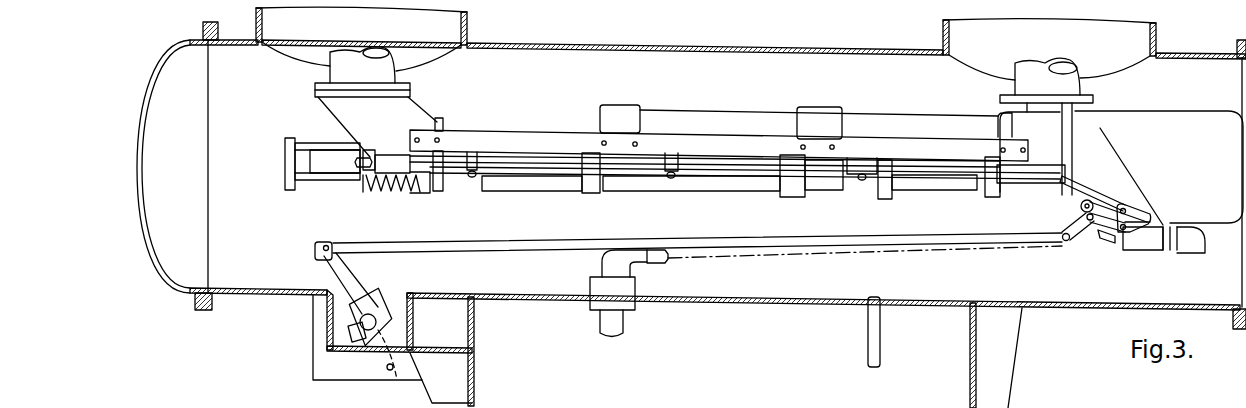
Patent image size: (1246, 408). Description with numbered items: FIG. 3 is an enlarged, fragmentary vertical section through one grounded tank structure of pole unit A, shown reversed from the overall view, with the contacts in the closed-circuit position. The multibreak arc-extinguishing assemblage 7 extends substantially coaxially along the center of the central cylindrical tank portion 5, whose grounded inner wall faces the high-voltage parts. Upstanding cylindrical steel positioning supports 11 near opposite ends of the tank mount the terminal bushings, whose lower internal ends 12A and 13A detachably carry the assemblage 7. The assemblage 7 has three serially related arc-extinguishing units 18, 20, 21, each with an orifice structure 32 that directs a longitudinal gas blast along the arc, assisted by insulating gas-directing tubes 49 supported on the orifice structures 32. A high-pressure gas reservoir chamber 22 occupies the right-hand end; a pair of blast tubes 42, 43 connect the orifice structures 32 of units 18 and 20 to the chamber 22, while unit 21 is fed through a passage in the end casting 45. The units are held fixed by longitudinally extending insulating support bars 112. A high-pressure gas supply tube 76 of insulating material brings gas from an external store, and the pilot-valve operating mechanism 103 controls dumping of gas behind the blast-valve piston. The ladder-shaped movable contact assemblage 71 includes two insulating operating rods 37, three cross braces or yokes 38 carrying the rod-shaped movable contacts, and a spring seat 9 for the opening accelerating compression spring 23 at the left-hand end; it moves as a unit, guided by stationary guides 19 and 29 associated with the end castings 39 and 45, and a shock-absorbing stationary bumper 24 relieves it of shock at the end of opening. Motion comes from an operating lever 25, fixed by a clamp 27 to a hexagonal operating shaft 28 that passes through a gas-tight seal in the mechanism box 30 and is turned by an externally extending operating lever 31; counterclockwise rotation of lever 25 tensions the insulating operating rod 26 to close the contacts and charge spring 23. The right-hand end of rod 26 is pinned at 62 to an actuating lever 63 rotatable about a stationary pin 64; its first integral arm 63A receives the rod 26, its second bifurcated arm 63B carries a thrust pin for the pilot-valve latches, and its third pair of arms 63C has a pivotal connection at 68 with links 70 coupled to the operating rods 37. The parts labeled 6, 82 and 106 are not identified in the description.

The central cylindrical tank portion 5 is at (1085, 310).
The tank end wall 6 is at (172, 52).
The multibreak arc-extinguishing assemblage 7 is at (692, 216).
The spring seat 9 is at (365, 184).
The cylindrical steel positioning support 11 is at (467, 20).
The lower internal end of terminal bushing 12A is at (1078, 75).
The lower internal end of terminal bushing 13A is at (385, 80).
The arc-extinguishing unit 18 is at (545, 212).
The stationary guide 19 is at (380, 156).
The arc-extinguishing unit 20 is at (760, 214).
The arc-extinguishing unit 21 is at (929, 216).
The high-pressure gas reservoir chamber 22 is at (1153, 115).
The opening accelerating compression spring 23 is at (405, 192).
The shock-absorbing stationary bumper 24 is at (285, 160).
The operating lever 25 is at (360, 286).
The insulating operating rod 26 is at (506, 244).
The clamp 27 is at (379, 312).
The hexagonal operating shaft 28 is at (357, 346).
The guide casting 29 is at (1036, 168).
The mechanism box 30 is at (313, 333).
The externally extending operating lever 31 is at (390, 366).
The orifice structure 32 is at (600, 192).
The insulating operating rod 37 is at (890, 178).
The cross brace or yoke 38 is at (470, 180).
The end casting 39 is at (423, 113).
The blast tube 42 is at (652, 105).
The blast tube 43 is at (882, 114).
The end casting 45 is at (998, 128).
The insulating gas-directing tube 49 is at (500, 185).
The pin 62 is at (1063, 241).
The actuating lever 63 is at (1086, 243).
The first integral arm 63A is at (1065, 223).
The second bifurcated arm 63B is at (1112, 240).
The third pair of integrally formed arms 63C is at (1118, 192).
The stationary pin 64 is at (1092, 200).
The pivotal connection 68 is at (1130, 212).
The link 70 is at (1072, 183).
The ladder-shaped movable contact assemblage 71 is at (512, 166).
The high-pressure gas supply tube 76 is at (694, 261).
The plate 82 is at (1150, 219).
The pilot-valve operating mechanism 103 is at (1153, 243).
The chamber 106 is at (962, 279).
The insulating support bar 112 is at (749, 140).
The pole unit A is at (726, 31).